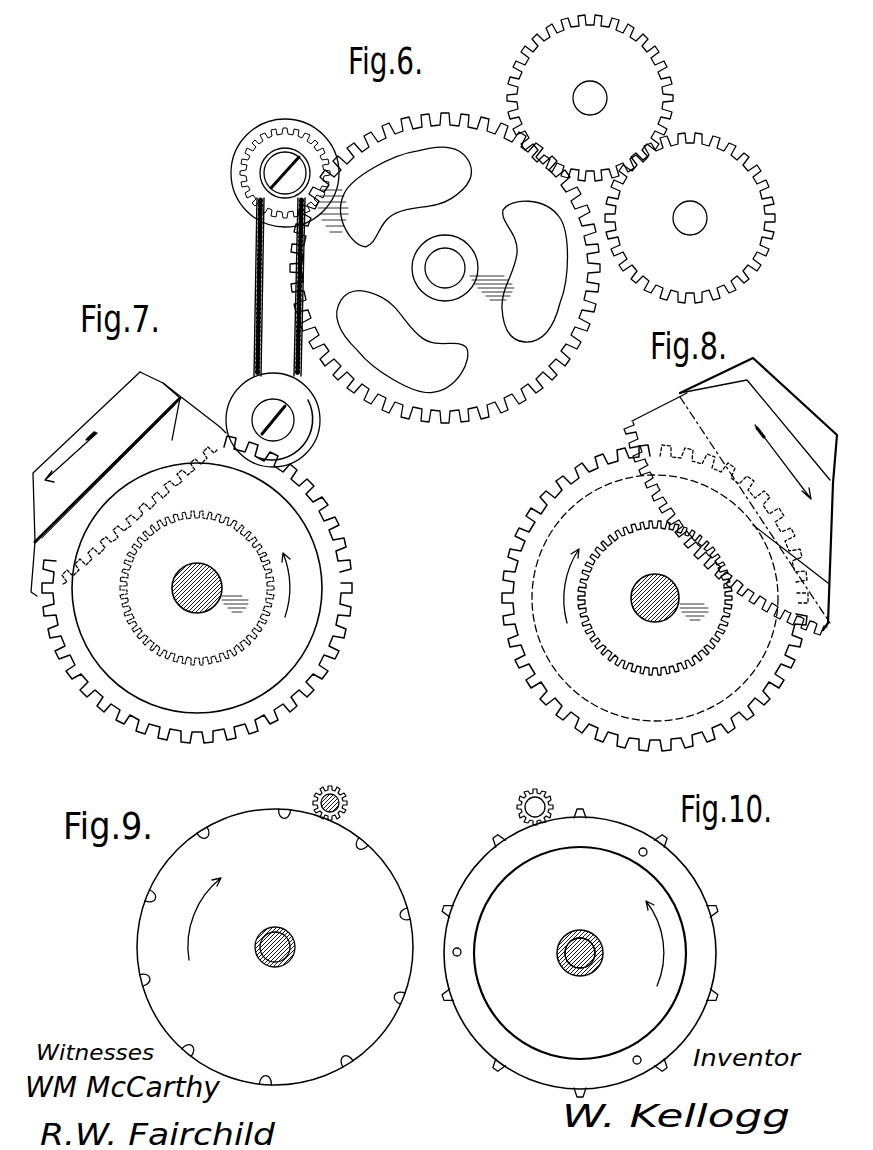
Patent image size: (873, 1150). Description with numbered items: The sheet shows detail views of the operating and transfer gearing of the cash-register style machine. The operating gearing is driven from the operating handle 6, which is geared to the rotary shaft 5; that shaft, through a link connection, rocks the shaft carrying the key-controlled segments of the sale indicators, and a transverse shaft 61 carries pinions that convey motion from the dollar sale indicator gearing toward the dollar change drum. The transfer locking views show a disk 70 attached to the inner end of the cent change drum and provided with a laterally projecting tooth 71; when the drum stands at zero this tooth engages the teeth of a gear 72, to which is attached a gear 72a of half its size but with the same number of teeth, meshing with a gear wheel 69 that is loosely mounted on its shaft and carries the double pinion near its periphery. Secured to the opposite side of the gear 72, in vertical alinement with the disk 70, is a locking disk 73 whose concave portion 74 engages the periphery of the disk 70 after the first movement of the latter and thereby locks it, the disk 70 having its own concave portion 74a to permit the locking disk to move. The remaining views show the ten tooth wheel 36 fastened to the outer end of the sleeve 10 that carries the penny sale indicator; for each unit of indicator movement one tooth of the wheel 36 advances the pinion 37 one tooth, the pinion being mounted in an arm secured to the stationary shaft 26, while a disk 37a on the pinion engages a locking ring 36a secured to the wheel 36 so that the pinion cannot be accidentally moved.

In FIG. 6, the rotary shaft 5 is at (707, 219).
In FIG. 6, the operating handle 6 is at (321, 430).
In FIG. 10, the sleeve 10 is at (583, 976).
In FIG. 9, the stationary shaft 26 is at (286, 946).
In FIG. 10, the stationary shaft 26 is at (585, 950).
In FIG. 9, the ten tooth wheel 36 is at (389, 881).
In FIG. 10, the ten tooth wheel 36 is at (605, 862).
In FIG. 10, the locking ring 36a is at (682, 888).
In FIG. 9, the pinion 37 is at (345, 796).
In FIG. 9, the disk 37a is at (342, 806).
In FIG. 10, the disk 37a is at (556, 802).
In FIG. 7, the transverse shaft 61 is at (196, 613).
In FIG. 8, the transverse shaft 61 is at (657, 586).
In FIG. 7, the gear wheel 69 is at (198, 411).
In FIG. 8, the gear wheel 69 is at (648, 418).
In FIG. 7, the disk 70 is at (155, 385).
In FIG. 7, the laterally projecting tooth 71 is at (99, 462).
In FIG. 8, the laterally projecting tooth 71 is at (777, 488).
In FIG. 7, the gear 72 is at (335, 549).
In FIG. 8, the gear 72 is at (570, 490).
In FIG. 7, the gear 72a is at (241, 531).
In FIG. 8, the gear 72a is at (625, 536).
In FIG. 7, the locking disk 73 is at (286, 526).
In FIG. 8, the locking disk 73 is at (550, 535).
In FIG. 7, the concave portion 74 is at (146, 483).
In FIG. 8, the concave portion 74 is at (721, 500).
In FIG. 7, the concave portion 74a is at (120, 490).
In FIG. 8, the concave portion 74a is at (753, 523).